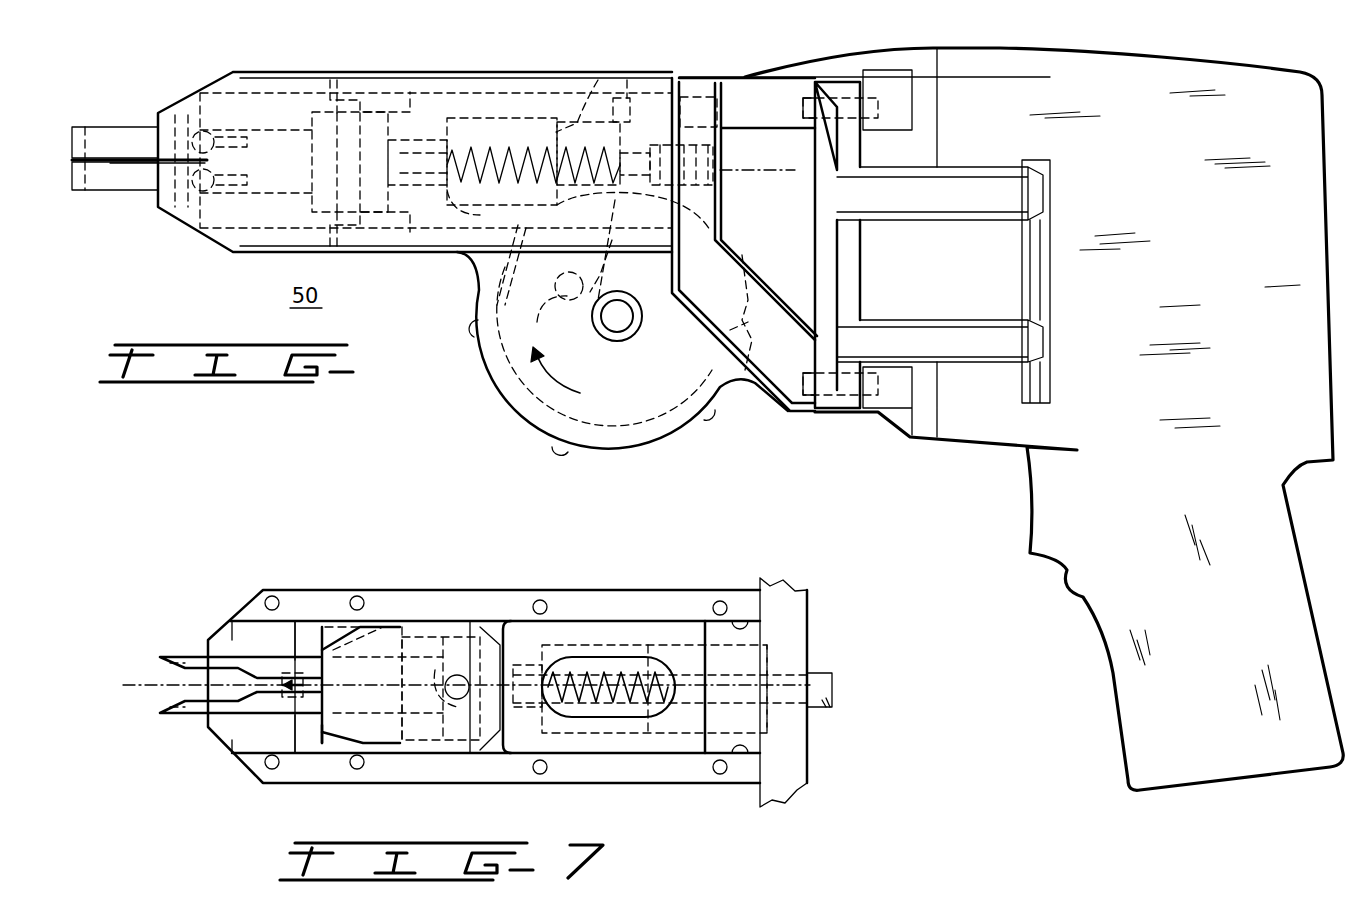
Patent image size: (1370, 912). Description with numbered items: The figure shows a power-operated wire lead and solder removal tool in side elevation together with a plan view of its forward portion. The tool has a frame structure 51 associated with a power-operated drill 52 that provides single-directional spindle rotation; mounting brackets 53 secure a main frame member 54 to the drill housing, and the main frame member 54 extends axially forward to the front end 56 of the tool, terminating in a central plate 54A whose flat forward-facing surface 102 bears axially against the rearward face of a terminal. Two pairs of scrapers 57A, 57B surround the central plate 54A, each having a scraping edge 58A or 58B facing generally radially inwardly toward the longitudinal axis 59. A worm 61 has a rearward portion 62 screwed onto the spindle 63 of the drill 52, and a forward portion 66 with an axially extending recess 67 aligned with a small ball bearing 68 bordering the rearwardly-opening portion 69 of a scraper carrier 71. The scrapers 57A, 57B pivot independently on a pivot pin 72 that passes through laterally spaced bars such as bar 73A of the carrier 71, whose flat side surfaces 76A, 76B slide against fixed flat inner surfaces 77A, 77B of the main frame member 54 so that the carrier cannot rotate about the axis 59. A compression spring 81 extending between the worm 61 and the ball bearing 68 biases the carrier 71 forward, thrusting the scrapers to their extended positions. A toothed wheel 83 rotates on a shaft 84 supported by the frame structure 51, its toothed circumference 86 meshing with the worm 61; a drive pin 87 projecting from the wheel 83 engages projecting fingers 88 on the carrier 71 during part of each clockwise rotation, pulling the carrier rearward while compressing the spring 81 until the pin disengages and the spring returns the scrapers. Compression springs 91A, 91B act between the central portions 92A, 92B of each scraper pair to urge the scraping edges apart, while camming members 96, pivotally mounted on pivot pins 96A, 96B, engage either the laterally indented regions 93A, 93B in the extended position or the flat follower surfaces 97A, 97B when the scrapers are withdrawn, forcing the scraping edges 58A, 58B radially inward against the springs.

In FIG. 6, the frame structure 51 is at (748, 58).
In FIG. 6, the power-operated drill 52 is at (1313, 470).
In FIG. 6, the mounting brackets 53 is at (960, 190).
In FIG. 6, the main frame member 54 is at (700, 88).
In FIG. 7, the main frame member 54 is at (805, 760).
In FIG. 6, the central plate 54A is at (147, 132).
In FIG. 7, the central plate 54A is at (244, 618).
In FIG. 6, the front end 56 is at (176, 92).
In FIG. 7, the front end 56 is at (186, 606).
In FIG. 7, the scrapers 57A is at (222, 655).
In FIG. 6, the scrapers 57B is at (92, 125).
In FIG. 7, the scrapers 57B is at (225, 712).
In FIG. 7, the scraping edge 58A is at (190, 655).
In FIG. 7, the scraping edge 58B is at (188, 712).
In FIG. 6, the longitudinal axis 59 is at (773, 178).
In FIG. 7, the longitudinal axis 59 is at (135, 680).
In FIG. 6, the worm 61 is at (627, 78).
In FIG. 7, the worm 61 is at (747, 660).
In FIG. 6, the rearward portion 62 is at (666, 130).
In FIG. 6, the spindle 63 is at (725, 160).
In FIG. 6, the forward portion 66 is at (597, 78).
In FIG. 6, the recess 67 is at (552, 150).
In FIG. 6, the ball bearing 68 is at (458, 212).
In FIG. 6, the rearwardly-opening portion 69 is at (574, 133).
In FIG. 7, the rearwardly-opening portion 69 is at (690, 645).
In FIG. 6, the scraper carrier 71 is at (521, 262).
In FIG. 7, the scraper carrier 71 is at (575, 630).
In FIG. 6, the pivot pin 72 is at (396, 138).
In FIG. 7, the pivot pin 72 is at (460, 636).
In FIG. 7, the bar 73A is at (420, 618).
In FIG. 7, the flat side surface 76A is at (607, 630).
In FIG. 7, the flat side surface 76B is at (625, 753).
In FIG. 7, the inner surface 77A is at (752, 630).
In FIG. 7, the inner surface 77B is at (748, 742).
In FIG. 6, the compression spring 81 is at (474, 152).
In FIG. 7, the compression spring 81 is at (603, 700).
In FIG. 6, the wheel 83 is at (755, 292).
In FIG. 7, the wheel 83 is at (818, 670).
In FIG. 6, the shaft 84 is at (630, 318).
In FIG. 6, the toothed circumference 86 is at (745, 328).
In FIG. 7, the toothed circumference 86 is at (840, 695).
In FIG. 6, the drive pin 87 is at (538, 306).
In FIG. 6, the projecting fingers 88 is at (602, 274).
In FIG. 6, the compression spring 91A is at (222, 130).
In FIG. 7, the compression spring 91A is at (292, 672).
In FIG. 6, the compression spring 91B is at (222, 196).
In FIG. 7, the central portion 92A is at (340, 672).
In FIG. 7, the central portion 92B is at (342, 703).
In FIG. 7, the laterally indented region 93A is at (316, 642).
In FIG. 7, the laterally indented region 93B is at (320, 716).
In FIG. 7, the camming member 96 is at (492, 720).
In FIG. 6, the pivot pin 96A is at (372, 72).
In FIG. 7, the pivot pin 96A is at (455, 700).
In FIG. 6, the pivot pin 96B is at (378, 252).
In FIG. 7, the follower surface 97A is at (305, 650).
In FIG. 7, the follower surface 97B is at (295, 735).
In FIG. 6, the forward-facing surface 102 is at (108, 158).
In FIG. 7, the forward-facing surface 102 is at (170, 692).